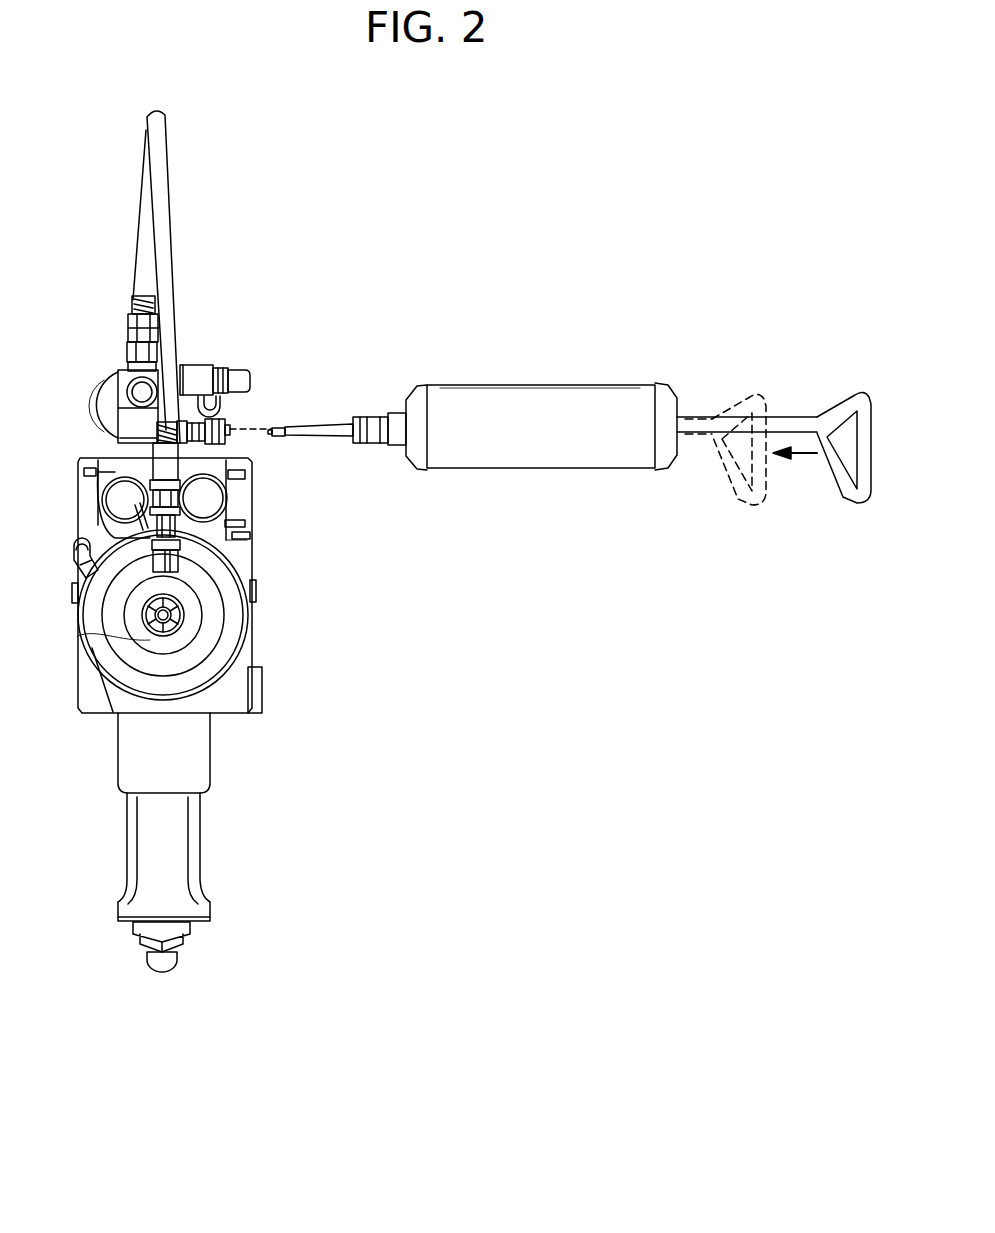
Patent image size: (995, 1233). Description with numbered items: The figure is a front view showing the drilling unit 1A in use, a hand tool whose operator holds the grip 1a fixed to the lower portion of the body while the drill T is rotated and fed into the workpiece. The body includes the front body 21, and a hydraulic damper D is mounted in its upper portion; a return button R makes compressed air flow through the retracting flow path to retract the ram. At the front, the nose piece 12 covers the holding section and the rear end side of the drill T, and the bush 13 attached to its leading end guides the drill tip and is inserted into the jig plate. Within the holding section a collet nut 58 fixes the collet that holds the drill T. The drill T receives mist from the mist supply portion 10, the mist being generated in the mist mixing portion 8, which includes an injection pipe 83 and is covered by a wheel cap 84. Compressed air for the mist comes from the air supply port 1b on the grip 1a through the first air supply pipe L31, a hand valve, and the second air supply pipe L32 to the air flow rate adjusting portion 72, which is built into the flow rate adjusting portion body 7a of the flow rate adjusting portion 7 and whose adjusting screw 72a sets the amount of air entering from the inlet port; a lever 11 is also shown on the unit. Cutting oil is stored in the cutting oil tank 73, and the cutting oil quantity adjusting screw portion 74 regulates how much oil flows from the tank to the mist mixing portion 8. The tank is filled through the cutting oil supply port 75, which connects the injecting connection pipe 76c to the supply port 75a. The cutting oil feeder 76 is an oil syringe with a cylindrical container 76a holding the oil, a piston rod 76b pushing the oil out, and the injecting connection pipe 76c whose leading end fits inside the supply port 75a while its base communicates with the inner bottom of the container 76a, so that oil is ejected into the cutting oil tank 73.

The drilling unit 1A is at (453, 133).
The grip 1a is at (200, 832).
The air supply port 1b is at (186, 940).
The flow rate adjusting portion 7 is at (188, 352).
The flow rate adjusting portion body 7a is at (108, 382).
The mist mixing portion 8 is at (92, 558).
The mist supply portion 10 is at (493, 350).
The lever rod 11 is at (168, 157).
The nose piece 12 is at (237, 563).
The bush 13 is at (158, 632).
The front body 21 is at (250, 648).
The collet nut 58 is at (213, 606).
The air flow rate adjusting portion 72 is at (253, 379).
The adjusting screw 72a is at (240, 367).
The cutting oil tank 73 is at (96, 392).
The cutting oil quantity adjusting screw portion 74 is at (128, 403).
The cutting oil supply port 75 is at (245, 465).
The supply port 75a is at (240, 440).
The cutting oil feeder 76 is at (563, 383).
The container 76a is at (560, 470).
The piston rod 76b is at (845, 396).
The injecting connection pipe 76c is at (304, 418).
The injection pipe 83 is at (163, 462).
The wheel cap 84 is at (163, 523).
The hydraulic damper D is at (118, 492).
The return button R is at (250, 530).
The drill T is at (170, 628).
The first air supply pipe L31 is at (162, 973).
The second air supply pipe L32 is at (237, 418).